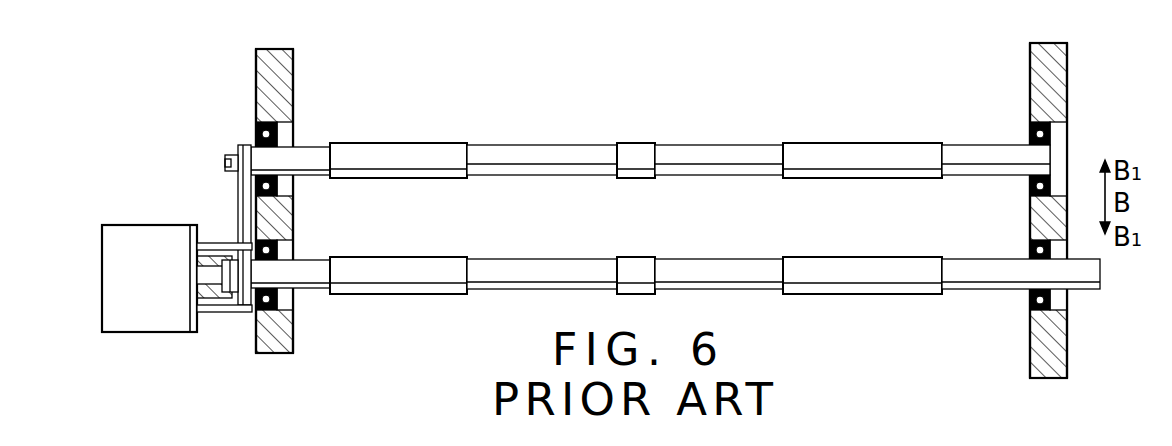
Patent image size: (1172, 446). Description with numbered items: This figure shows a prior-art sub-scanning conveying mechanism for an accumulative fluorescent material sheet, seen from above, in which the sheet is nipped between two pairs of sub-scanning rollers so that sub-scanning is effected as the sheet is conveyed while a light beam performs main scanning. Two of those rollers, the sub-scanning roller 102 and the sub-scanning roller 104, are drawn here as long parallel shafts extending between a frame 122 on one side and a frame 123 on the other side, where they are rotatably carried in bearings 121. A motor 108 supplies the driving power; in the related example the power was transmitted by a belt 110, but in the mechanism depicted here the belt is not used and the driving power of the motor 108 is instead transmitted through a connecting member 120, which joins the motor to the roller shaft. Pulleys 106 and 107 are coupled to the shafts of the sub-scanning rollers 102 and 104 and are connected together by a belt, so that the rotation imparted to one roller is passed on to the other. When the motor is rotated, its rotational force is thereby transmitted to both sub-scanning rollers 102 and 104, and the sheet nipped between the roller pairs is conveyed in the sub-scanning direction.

The sub-scanning roller 102 is at (440, 260).
The sub-scanning roller 104 is at (418, 157).
The pulley 106 is at (247, 305).
The pulley 107 is at (237, 173).
The motor 108 is at (128, 320).
The belt 110 is at (247, 222).
The connecting member 120 is at (217, 312).
The bearings 121 is at (255, 132).
The frame 122 is at (280, 95).
The frame 123 is at (1035, 78).